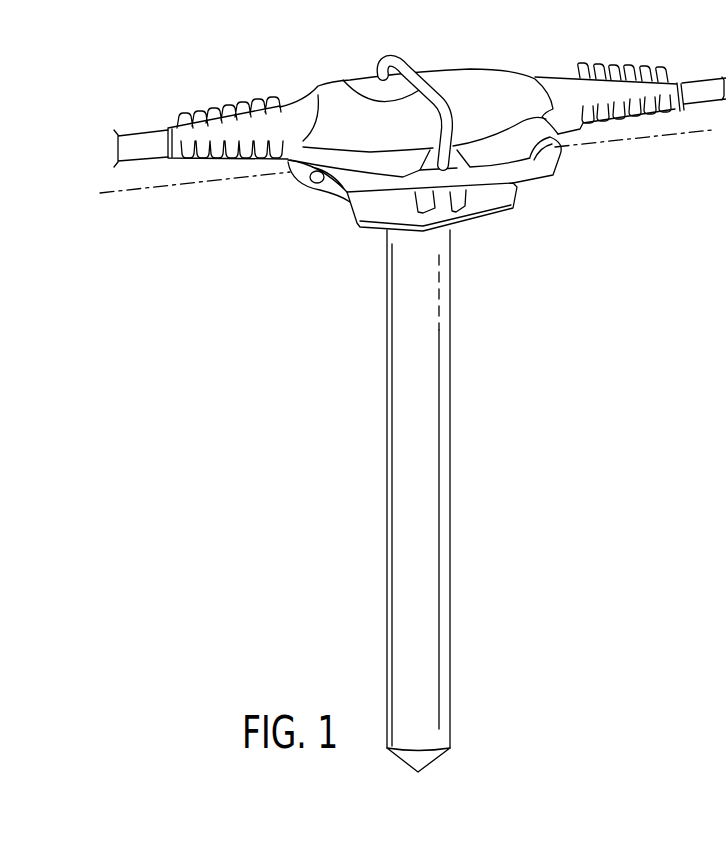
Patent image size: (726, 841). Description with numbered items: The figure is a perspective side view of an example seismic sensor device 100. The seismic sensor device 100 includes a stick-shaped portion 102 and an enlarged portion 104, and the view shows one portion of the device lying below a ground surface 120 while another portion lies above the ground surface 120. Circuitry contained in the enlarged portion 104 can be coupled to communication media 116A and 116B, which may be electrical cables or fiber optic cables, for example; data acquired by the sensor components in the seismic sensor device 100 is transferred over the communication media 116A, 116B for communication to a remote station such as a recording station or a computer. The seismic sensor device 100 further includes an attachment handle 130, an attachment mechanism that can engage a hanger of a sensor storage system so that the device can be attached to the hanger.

The seismic sensor device 100 is at (477, 49).
The stick-shaped portion 102 is at (452, 496).
The enlarged portion 104 is at (518, 195).
The communication medium 116A is at (145, 134).
The communication medium 116B is at (703, 82).
The ground surface 120 is at (197, 185).
The attachment handle 130 is at (360, 88).